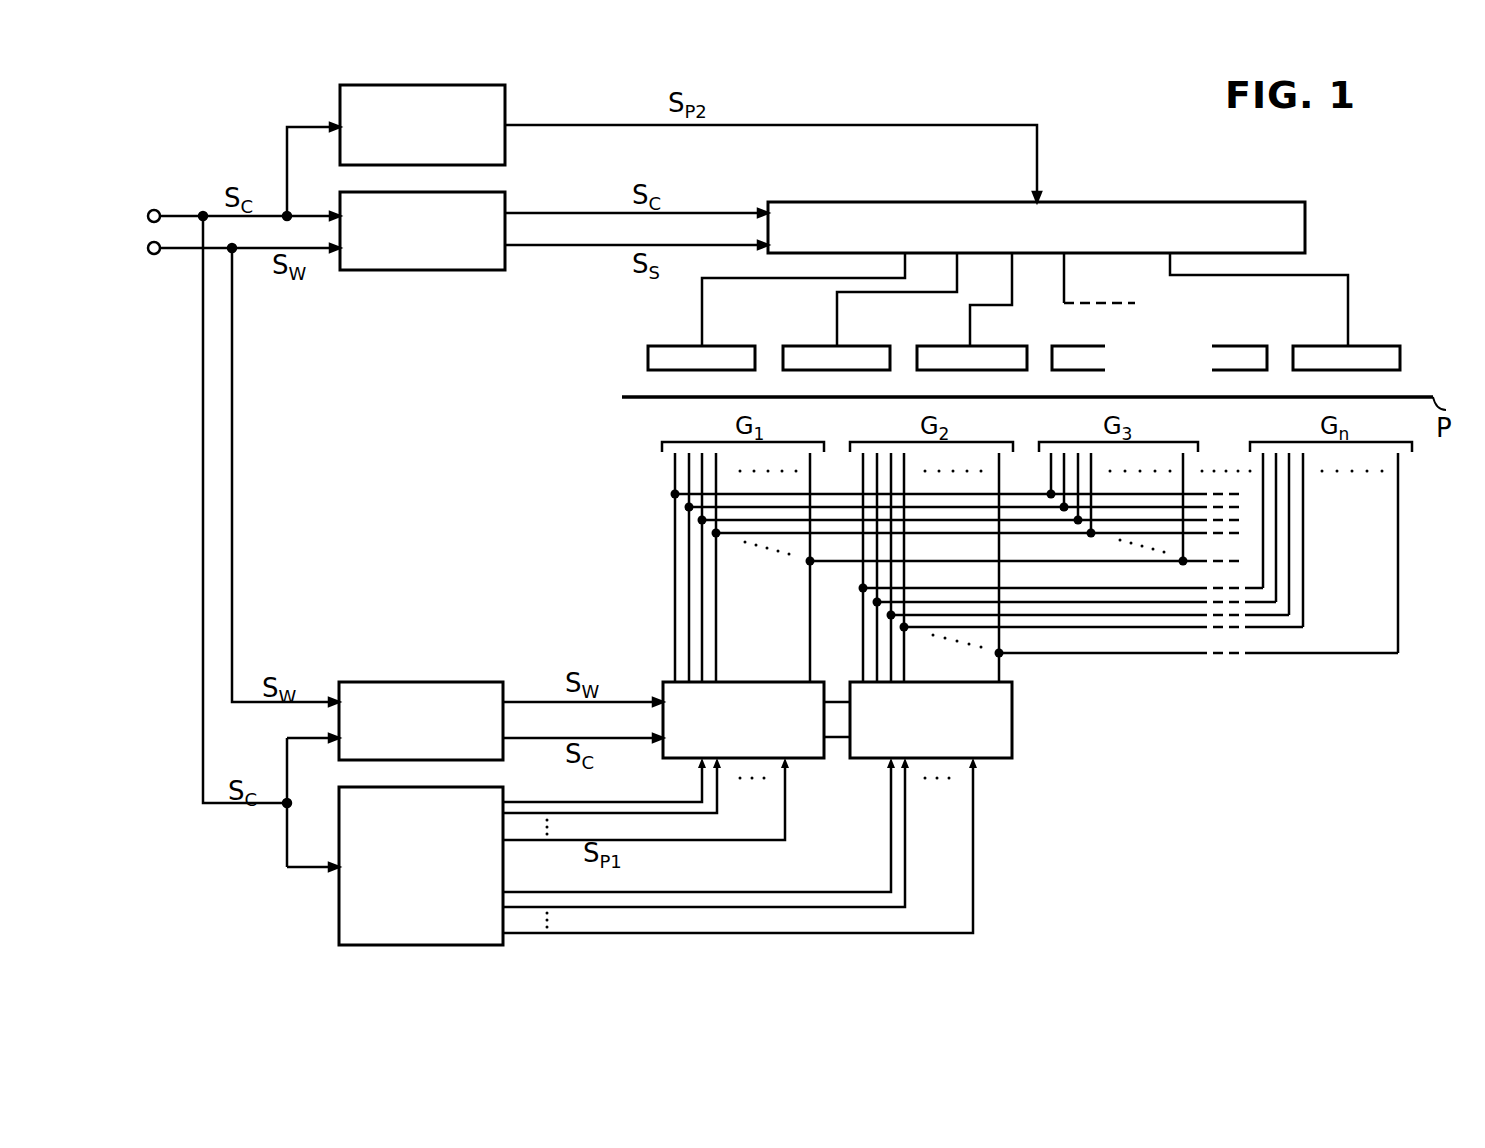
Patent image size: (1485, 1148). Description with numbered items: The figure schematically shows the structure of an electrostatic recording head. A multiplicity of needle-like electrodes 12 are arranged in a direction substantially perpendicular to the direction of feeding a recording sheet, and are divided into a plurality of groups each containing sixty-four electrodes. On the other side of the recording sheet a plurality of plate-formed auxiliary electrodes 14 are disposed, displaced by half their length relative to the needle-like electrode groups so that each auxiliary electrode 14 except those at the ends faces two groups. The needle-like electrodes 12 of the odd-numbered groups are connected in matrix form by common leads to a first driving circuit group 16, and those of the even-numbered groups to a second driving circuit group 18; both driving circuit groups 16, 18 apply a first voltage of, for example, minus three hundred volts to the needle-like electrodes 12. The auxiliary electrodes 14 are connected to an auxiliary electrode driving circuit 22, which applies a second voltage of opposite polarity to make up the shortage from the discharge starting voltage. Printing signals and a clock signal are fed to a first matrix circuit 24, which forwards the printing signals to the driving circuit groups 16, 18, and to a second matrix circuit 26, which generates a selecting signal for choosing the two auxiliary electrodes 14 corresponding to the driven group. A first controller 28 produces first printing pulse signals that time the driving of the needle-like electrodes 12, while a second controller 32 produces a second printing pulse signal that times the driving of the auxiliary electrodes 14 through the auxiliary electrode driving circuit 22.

The needle-like electrodes 12 is at (674, 475).
The auxiliary electrodes 14 is at (688, 347).
The first driving circuit group 16 is at (810, 758).
The second driving circuit group 18 is at (1012, 718).
The auxiliary electrode driving circuit 22 is at (1305, 228).
The first matrix circuit 24 is at (428, 682).
The second matrix circuit 26 is at (418, 270).
The first controller 28 is at (339, 922).
The second controller 32 is at (505, 102).